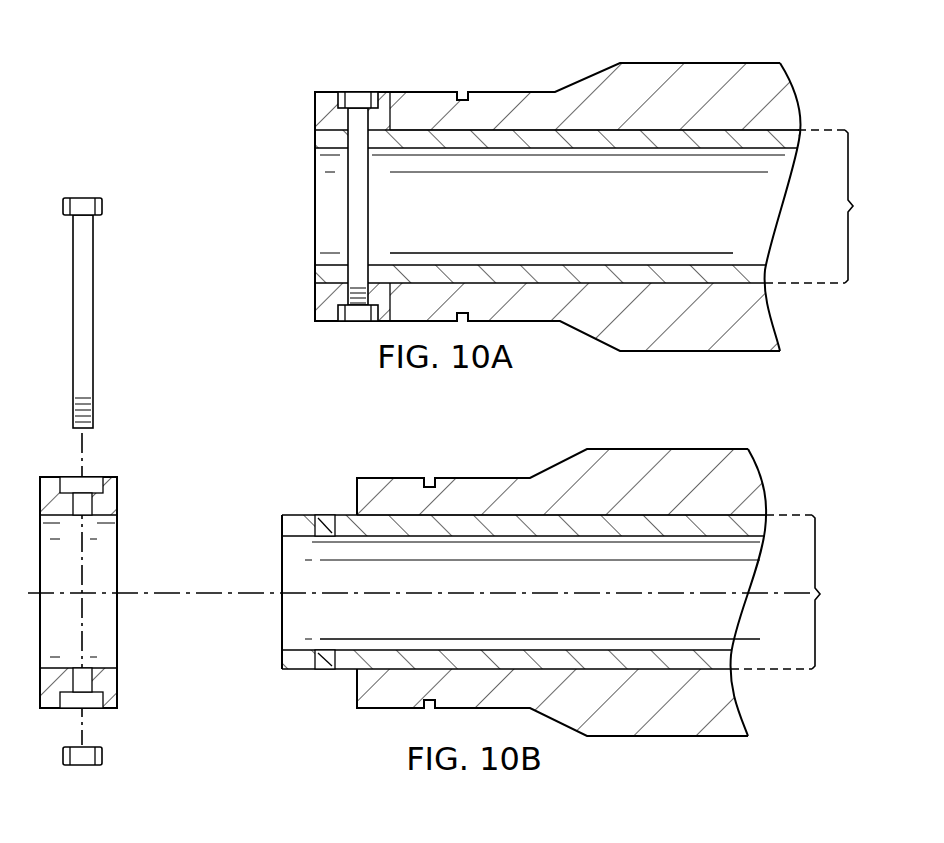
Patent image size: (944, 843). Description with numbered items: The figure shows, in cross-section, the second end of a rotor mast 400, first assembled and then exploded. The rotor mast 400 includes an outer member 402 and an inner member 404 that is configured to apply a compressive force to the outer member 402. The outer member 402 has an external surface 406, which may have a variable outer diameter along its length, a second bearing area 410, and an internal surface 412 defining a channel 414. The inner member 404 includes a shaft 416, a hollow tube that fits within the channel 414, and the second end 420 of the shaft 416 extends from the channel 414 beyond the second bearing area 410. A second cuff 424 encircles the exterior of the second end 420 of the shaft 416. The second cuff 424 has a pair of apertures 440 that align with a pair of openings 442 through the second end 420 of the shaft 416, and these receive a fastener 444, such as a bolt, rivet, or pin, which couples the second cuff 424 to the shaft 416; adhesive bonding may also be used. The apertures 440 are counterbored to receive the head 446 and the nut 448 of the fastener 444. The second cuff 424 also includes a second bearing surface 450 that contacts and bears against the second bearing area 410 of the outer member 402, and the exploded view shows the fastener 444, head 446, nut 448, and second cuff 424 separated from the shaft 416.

In FIG. 10A, the rotor mast 400 is at (312, 60).
In FIG. 10B, the rotor mast 400 is at (803, 432).
In FIG. 10A, the outer member 402 is at (722, 62).
In FIG. 10B, the outer member 402 is at (640, 448).
In FIG. 10A, the inner member 404 is at (577, 127).
In FIG. 10B, the inner member 404 is at (497, 513).
In FIG. 10A, the external surface 406 is at (675, 63).
In FIG. 10B, the second bearing area 410 is at (353, 705).
In FIG. 10A, the internal surface 412 is at (405, 120).
In FIG. 10A, the channel 414 is at (872, 206).
In FIG. 10B, the channel 414 is at (839, 592).
In FIG. 10A, the shaft 416 is at (768, 258).
In FIG. 10B, the shaft 416 is at (731, 650).
In FIG. 10A, the second end 420 is at (340, 143).
In FIG. 10B, the second end 420 is at (303, 537).
In FIG. 10A, the second cuff 424 is at (313, 103).
In FIG. 10B, the second cuff 424 is at (118, 490).
In FIG. 10B, the apertures 440 is at (95, 515).
In FIG. 10B, the openings 442 is at (325, 514).
In FIG. 10A, the fastener 444 is at (372, 225).
In FIG. 10B, the fastener 444 is at (95, 295).
In FIG. 10A, the head 446 is at (355, 98).
In FIG. 10B, the head 446 is at (80, 198).
In FIG. 10B, the nut 448 is at (80, 766).
In FIG. 10B, the second bearing surface 450 is at (118, 700).